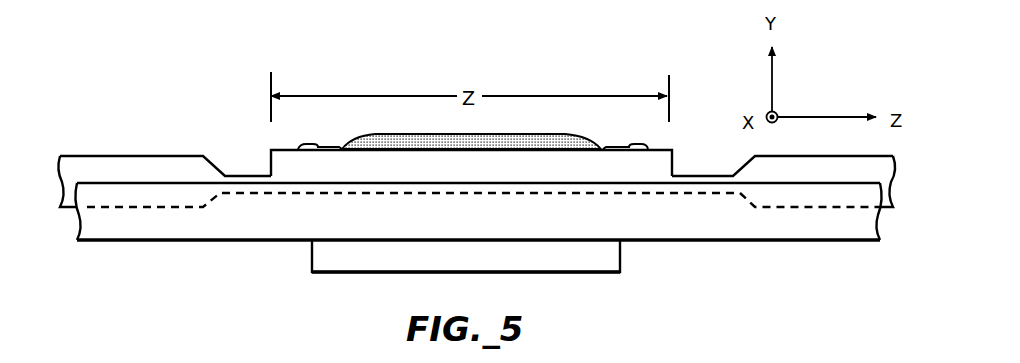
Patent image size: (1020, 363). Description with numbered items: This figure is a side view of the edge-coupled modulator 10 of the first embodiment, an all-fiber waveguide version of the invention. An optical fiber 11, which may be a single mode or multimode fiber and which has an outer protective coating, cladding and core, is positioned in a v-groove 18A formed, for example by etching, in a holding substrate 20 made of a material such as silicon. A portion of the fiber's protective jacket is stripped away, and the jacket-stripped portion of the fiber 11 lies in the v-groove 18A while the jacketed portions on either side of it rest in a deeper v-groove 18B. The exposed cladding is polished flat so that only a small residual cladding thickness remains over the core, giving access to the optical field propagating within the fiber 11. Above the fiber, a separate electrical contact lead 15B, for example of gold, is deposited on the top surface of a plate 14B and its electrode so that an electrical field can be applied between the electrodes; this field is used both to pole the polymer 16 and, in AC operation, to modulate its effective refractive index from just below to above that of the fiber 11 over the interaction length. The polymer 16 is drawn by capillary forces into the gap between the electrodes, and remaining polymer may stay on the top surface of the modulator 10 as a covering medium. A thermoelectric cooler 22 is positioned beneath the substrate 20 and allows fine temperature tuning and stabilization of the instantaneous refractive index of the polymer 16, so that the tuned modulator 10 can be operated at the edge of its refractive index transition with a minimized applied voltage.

The edge-coupled modulator 10 is at (660, 136).
The optical fiber 11 is at (166, 148).
The plate 14B is at (650, 148).
The electrical contact lead 15B is at (310, 146).
The polymer 16 is at (442, 133).
The v-groove 18A is at (676, 195).
The deeper v-groove 18B is at (772, 209).
The holding substrate 20 is at (143, 226).
The thermoelectric cooler 22 is at (607, 253).